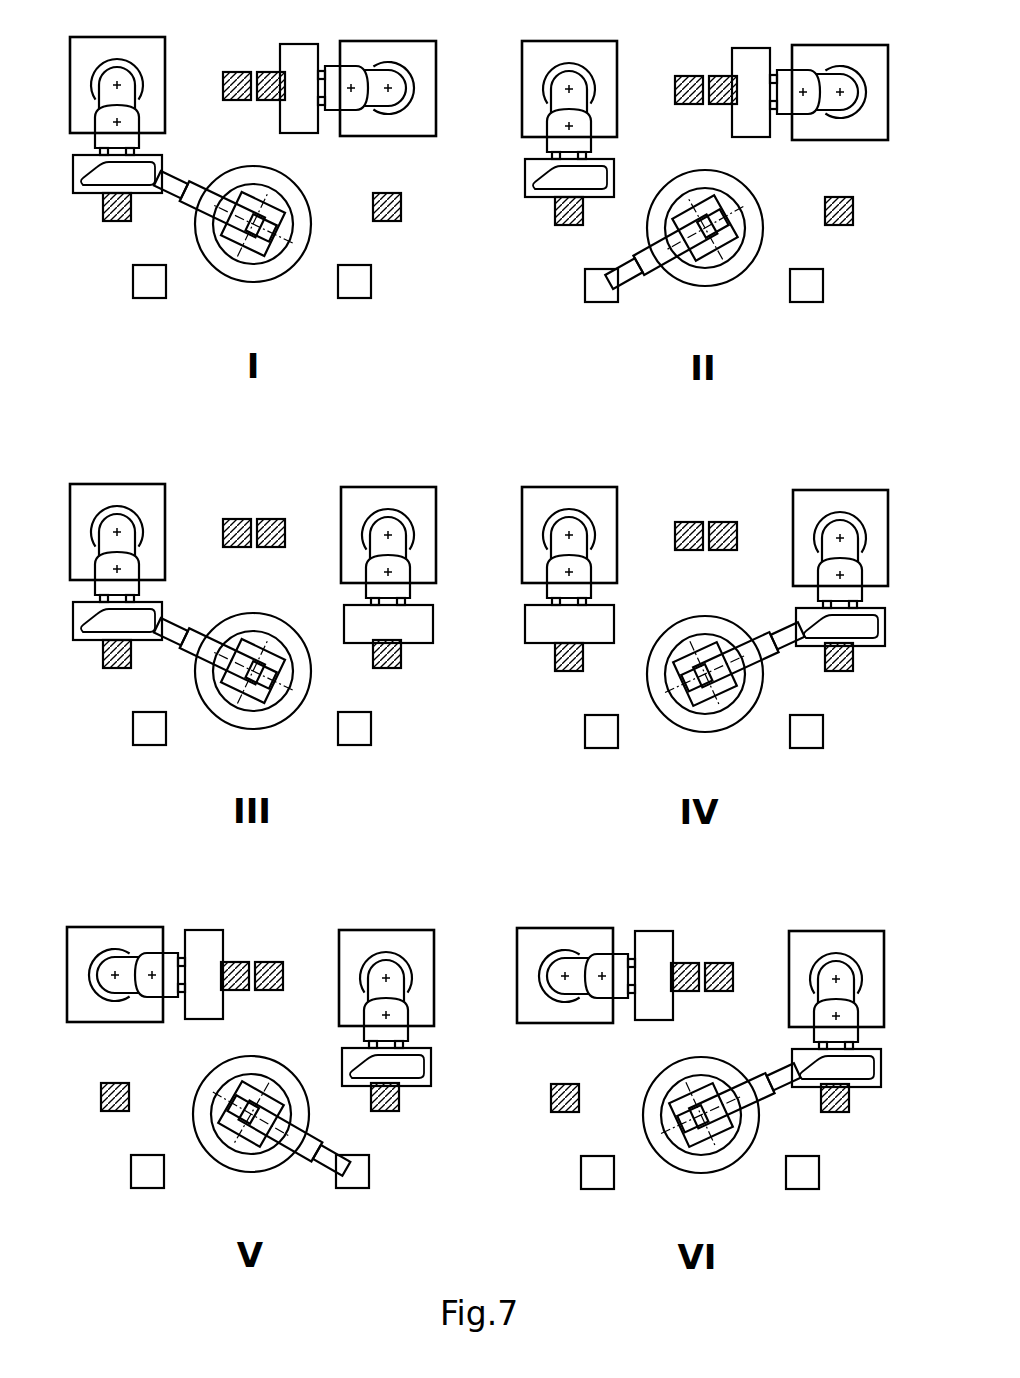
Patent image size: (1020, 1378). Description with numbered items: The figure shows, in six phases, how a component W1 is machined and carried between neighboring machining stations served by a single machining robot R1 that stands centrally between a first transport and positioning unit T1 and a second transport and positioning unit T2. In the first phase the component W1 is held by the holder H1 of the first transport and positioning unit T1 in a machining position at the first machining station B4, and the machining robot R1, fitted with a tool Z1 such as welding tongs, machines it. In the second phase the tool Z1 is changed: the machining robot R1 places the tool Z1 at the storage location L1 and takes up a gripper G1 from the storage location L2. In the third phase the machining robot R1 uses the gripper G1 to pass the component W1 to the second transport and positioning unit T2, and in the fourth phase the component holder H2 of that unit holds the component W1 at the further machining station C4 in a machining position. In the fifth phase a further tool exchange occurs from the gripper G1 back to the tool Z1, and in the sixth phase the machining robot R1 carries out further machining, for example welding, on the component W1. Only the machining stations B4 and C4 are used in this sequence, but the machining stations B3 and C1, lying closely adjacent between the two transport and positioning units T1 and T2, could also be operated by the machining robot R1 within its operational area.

The first transport and positioning unit T1 is at (343, 98).
The second transport and positioning unit T2 is at (603, 90).
The holder H1 is at (80, 163).
The component W1 is at (88, 181).
The first machining station B4 is at (107, 212).
The component holder H2 is at (305, 46).
The machining station B3 is at (232, 70).
The machining station C1 is at (270, 71).
The further machining station C4 is at (401, 208).
The machining robot R1 is at (287, 188).
The tool Z1 is at (150, 188).
The storage location L1 is at (588, 290).
The storage location L2 is at (816, 289).
The gripper G1 is at (145, 633).